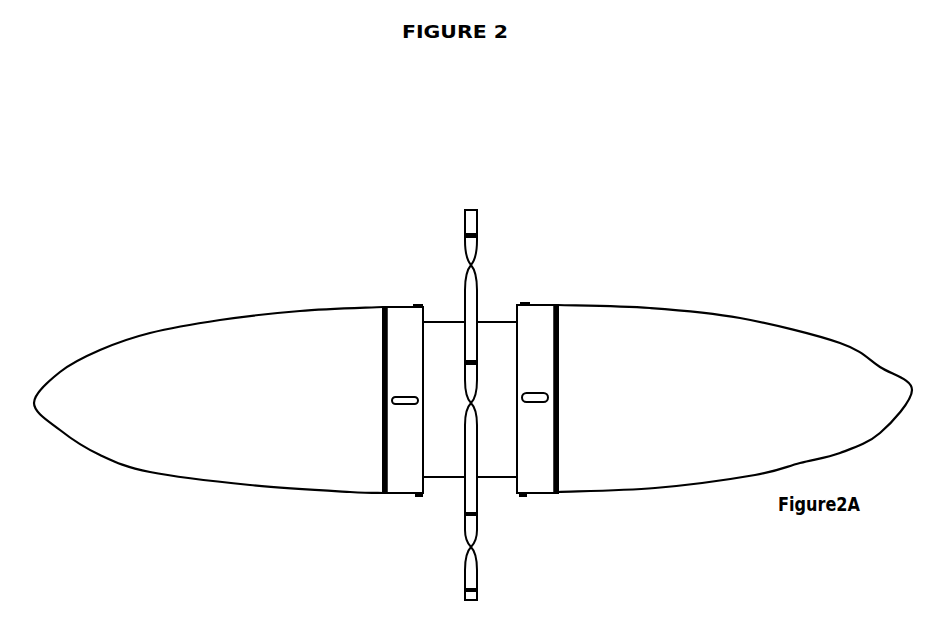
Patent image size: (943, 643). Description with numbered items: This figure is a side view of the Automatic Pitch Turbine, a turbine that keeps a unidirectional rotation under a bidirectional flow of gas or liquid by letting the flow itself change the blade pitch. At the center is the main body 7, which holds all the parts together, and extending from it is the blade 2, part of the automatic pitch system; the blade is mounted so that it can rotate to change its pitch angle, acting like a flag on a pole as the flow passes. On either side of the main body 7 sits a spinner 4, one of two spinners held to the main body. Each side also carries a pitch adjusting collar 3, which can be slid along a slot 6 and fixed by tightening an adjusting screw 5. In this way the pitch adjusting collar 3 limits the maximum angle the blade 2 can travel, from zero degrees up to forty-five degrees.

The blade 2 is at (465, 210).
The pitch adjusting collar 3 is at (401, 306).
The spinner 4 is at (177, 476).
The adjusting screw 5 is at (415, 404).
The slot 6 is at (541, 392).
The main body 7 is at (494, 312).